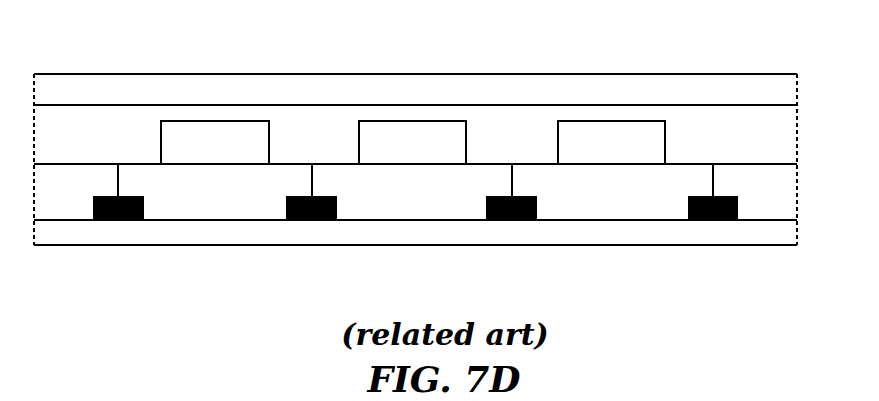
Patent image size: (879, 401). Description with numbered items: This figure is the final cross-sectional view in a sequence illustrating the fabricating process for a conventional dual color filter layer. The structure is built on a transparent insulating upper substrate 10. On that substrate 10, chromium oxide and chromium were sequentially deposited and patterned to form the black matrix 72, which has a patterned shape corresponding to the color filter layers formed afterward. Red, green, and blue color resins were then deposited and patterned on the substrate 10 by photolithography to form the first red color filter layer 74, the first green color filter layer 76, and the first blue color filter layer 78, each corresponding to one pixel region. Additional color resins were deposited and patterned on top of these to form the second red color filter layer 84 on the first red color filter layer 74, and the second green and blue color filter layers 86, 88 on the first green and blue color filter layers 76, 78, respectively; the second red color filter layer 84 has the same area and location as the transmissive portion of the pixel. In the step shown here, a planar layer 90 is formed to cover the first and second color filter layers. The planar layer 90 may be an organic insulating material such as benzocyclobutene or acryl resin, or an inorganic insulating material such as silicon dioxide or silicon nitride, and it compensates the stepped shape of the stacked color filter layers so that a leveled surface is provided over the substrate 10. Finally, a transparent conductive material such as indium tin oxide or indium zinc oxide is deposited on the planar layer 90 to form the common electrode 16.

The upper substrate 10 is at (775, 230).
The common electrode 16 is at (655, 88).
The black matrix 72 is at (738, 205).
The first red color filter layer 74 is at (208, 210).
The first green color filter layer 76 is at (413, 210).
The first blue color filter layer 78 is at (595, 210).
The second red color filter layer 84 is at (216, 122).
The second green color filter layer 86 is at (408, 125).
The second blue color filter layer 88 is at (593, 120).
The planar layer 90 is at (735, 115).